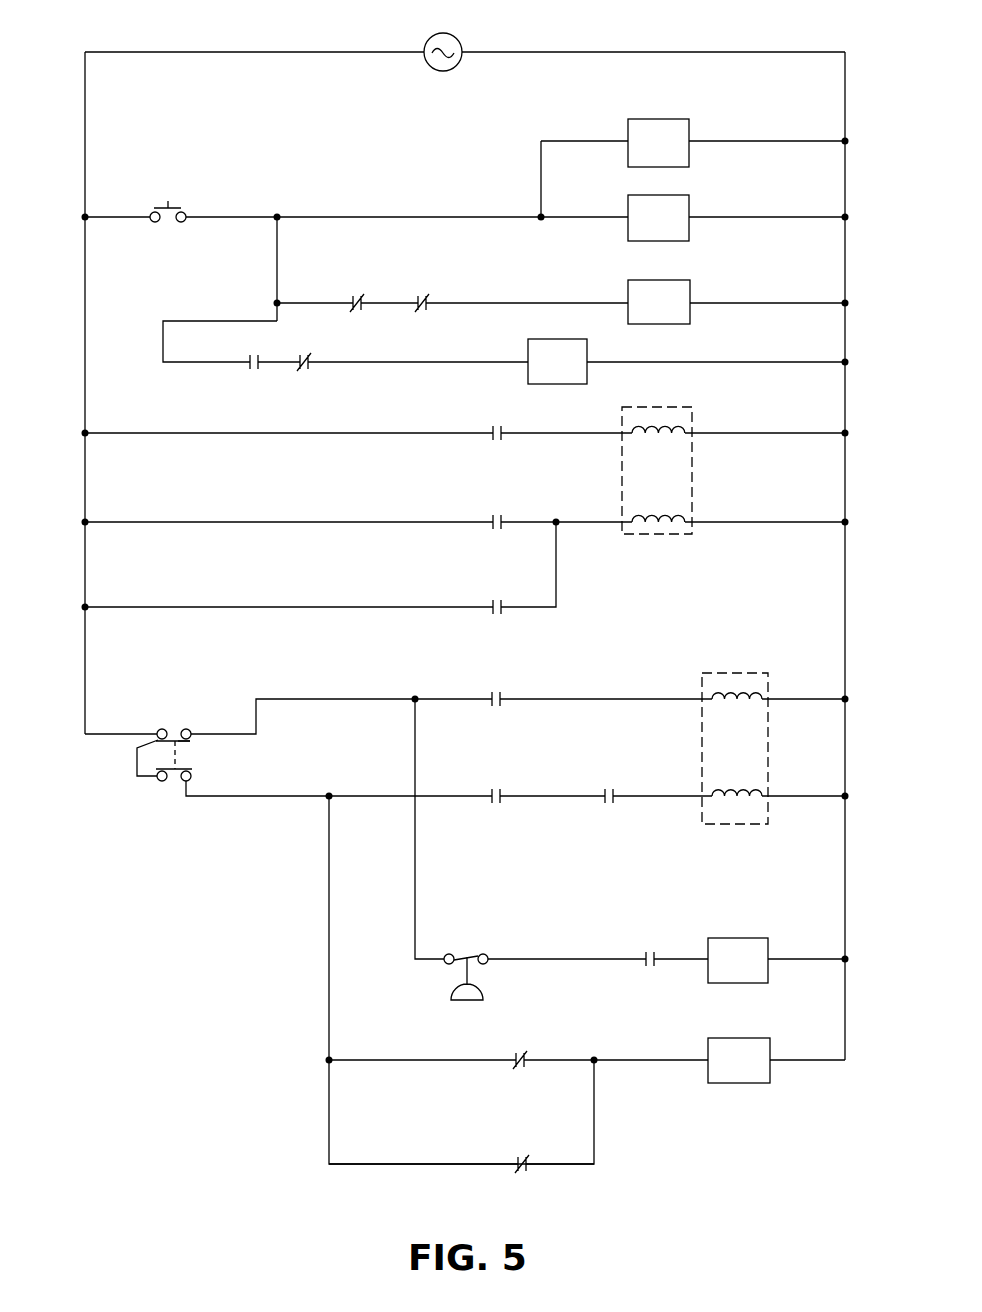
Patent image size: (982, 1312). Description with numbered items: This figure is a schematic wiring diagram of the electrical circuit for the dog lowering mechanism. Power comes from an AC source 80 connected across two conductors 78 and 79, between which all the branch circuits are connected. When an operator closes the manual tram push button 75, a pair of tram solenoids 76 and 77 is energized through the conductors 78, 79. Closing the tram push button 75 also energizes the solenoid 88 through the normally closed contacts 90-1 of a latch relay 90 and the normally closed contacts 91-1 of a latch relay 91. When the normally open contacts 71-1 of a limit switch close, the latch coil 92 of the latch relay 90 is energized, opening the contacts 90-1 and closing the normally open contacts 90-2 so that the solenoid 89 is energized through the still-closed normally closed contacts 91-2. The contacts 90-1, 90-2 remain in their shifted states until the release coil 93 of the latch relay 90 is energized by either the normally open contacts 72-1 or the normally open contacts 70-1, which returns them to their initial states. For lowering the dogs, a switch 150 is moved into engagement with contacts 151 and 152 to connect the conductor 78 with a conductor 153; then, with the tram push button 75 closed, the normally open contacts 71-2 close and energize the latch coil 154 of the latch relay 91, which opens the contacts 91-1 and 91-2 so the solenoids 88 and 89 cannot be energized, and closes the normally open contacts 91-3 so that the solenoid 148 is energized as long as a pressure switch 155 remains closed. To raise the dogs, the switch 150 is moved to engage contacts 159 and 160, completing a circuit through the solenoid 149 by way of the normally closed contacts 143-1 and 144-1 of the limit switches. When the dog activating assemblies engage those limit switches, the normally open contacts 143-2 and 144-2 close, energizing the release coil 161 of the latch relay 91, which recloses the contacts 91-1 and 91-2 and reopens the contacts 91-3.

The normally open contacts 70-1 is at (500, 517).
The normally open contacts 71-1 is at (500, 428).
The normally open contacts 71-2 is at (502, 692).
The normally open contacts 72-1 is at (500, 603).
The manual tram push button 75 is at (175, 209).
The tram solenoid 76 is at (672, 118).
The tram solenoid 77 is at (683, 196).
The conductor 78 is at (84, 108).
The conductor 79 is at (845, 84).
The AC source 80 is at (442, 33).
The solenoid 88 is at (683, 280).
The solenoid 89 is at (555, 339).
The latch relay 90 is at (691, 404).
The normally closed contacts 90-1 is at (362, 295).
The normally open contacts 90-2 is at (253, 355).
The latch relay 91 is at (747, 669).
The normally closed contacts 91-1 is at (426, 295).
The normally closed contacts 91-2 is at (309, 366).
The normally open contacts 91-3 is at (654, 953).
The latch coil 92 is at (673, 437).
The release coil 93 is at (675, 512).
The normally closed contacts 143-1 is at (526, 1168).
The normally open contacts 143-2 is at (613, 789).
The normally closed contacts 144-1 is at (527, 1052).
The normally open contacts 144-2 is at (504, 788).
The solenoid 148 is at (756, 938).
The solenoid 149 is at (760, 1038).
The switch 150 is at (177, 727).
The contact 151 is at (157, 731).
The contact 152 is at (190, 738).
The conductor 153 is at (210, 712).
The latch coil 154 is at (758, 694).
The pressure switch 155 is at (467, 957).
The contact 159 is at (160, 781).
The contact 160 is at (192, 776).
The release coil 161 is at (748, 789).